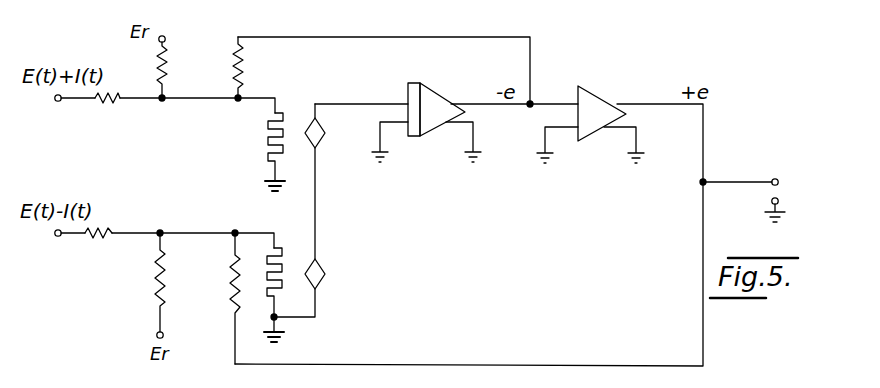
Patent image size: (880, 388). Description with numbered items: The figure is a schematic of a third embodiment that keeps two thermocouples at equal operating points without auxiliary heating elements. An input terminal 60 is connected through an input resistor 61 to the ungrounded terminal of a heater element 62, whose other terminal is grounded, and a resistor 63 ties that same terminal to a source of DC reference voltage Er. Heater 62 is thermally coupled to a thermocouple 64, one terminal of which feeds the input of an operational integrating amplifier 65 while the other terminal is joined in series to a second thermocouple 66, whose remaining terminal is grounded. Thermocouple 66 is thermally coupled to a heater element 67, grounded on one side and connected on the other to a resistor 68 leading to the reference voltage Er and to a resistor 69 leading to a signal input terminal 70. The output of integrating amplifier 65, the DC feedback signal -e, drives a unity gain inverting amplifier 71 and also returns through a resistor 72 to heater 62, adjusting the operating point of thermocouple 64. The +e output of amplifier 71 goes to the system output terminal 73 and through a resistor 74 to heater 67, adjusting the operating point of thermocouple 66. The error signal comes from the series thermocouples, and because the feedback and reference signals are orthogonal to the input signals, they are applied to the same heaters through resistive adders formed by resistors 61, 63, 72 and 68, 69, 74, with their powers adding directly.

The input terminal 60 is at (56, 101).
The input resistor 61 is at (108, 101).
The heater element 62 is at (268, 150).
The resistor 63 is at (166, 78).
The thermocouple 64 is at (322, 140).
The operational integrating amplifier 65 is at (437, 83).
The thermocouple 66 is at (318, 262).
The heater element 67 is at (282, 245).
The resistor 68 is at (157, 268).
The resistor 69 is at (89, 238).
The signal input terminal 70 is at (55, 236).
The unity gain inverting amplifier 71 is at (588, 85).
The resistor 72 is at (244, 78).
The system output terminal 73 is at (773, 179).
The resistor 74 is at (232, 282).